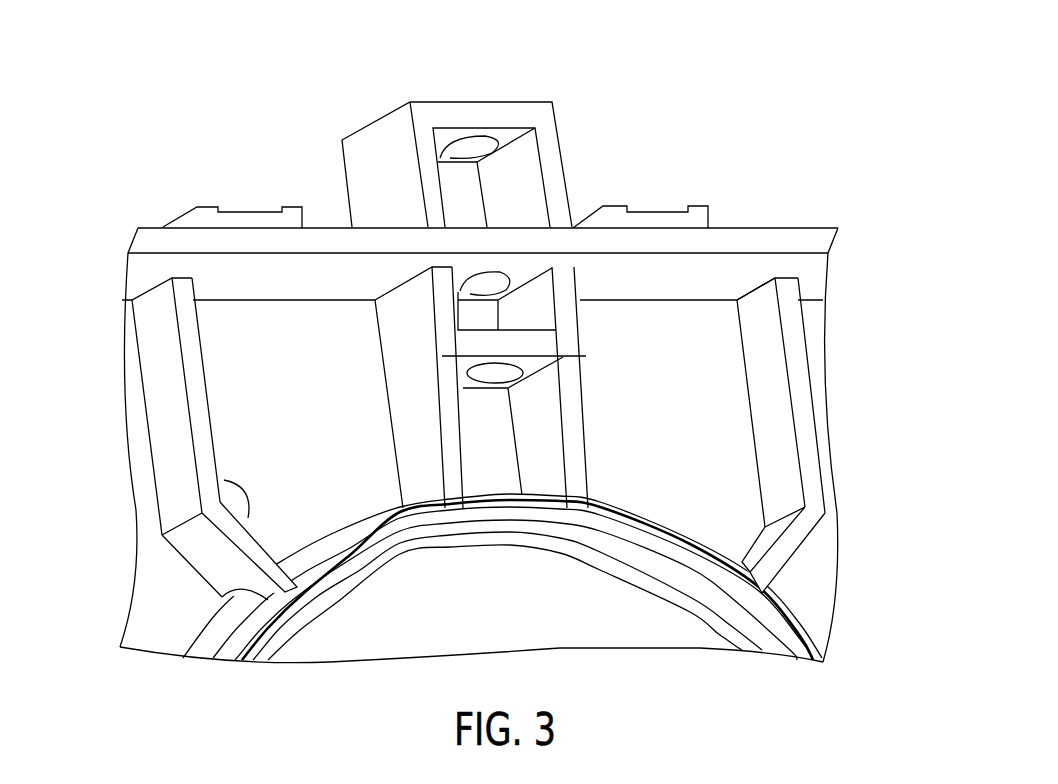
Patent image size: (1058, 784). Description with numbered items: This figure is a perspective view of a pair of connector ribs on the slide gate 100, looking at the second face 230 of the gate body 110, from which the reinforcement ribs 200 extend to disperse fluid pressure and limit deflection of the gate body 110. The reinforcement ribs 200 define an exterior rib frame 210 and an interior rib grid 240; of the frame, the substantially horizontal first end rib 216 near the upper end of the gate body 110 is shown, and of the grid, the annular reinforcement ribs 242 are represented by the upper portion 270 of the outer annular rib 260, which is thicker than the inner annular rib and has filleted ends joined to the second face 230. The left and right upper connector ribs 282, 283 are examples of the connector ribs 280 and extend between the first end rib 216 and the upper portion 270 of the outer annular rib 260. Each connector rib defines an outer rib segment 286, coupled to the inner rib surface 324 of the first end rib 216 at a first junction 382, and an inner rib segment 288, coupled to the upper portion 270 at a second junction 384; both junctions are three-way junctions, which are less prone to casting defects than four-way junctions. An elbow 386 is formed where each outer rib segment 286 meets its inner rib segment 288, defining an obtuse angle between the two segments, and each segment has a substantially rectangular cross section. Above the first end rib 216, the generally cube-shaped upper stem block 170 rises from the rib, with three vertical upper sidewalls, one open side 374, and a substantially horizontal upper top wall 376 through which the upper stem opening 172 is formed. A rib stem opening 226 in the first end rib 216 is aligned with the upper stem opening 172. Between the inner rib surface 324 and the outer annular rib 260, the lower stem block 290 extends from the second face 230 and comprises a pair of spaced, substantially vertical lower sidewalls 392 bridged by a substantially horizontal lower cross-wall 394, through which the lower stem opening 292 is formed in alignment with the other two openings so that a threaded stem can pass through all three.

The slide gate 100 is at (816, 72).
The gate body 110 is at (317, 645).
The upper stem block 170 is at (352, 97).
The upper stem opening 172 is at (516, 132).
The reinforcement ribs 200 is at (822, 378).
The exterior rib frame 210 is at (290, 282).
The first end rib 216 is at (736, 268).
The rib stem opening 226 is at (484, 289).
The second face 230 is at (413, 627).
The interior rib grid 240 is at (814, 604).
The annular reinforcement ribs 242 is at (775, 640).
The outer annular rib 260 is at (507, 596).
The upper portion 270 is at (675, 560).
The connector ribs 280 is at (128, 446).
The left upper connector rib 282 is at (142, 337).
The right upper connector rib 283 is at (785, 462).
The outer rib segment 286 is at (768, 328).
The inner rib segment 288 is at (762, 558).
The lower stem block 290 is at (366, 425).
The lower stem opening 292 is at (491, 388).
The inner rib surface 324 is at (222, 282).
The open side 374 is at (506, 214).
The upper top wall 376 is at (470, 105).
The first junction 382 is at (152, 283).
The second junction 384 is at (222, 597).
The elbow 386 is at (180, 528).
The lower sidewalls 392 is at (395, 370).
The lower cross-wall 394 is at (536, 362).